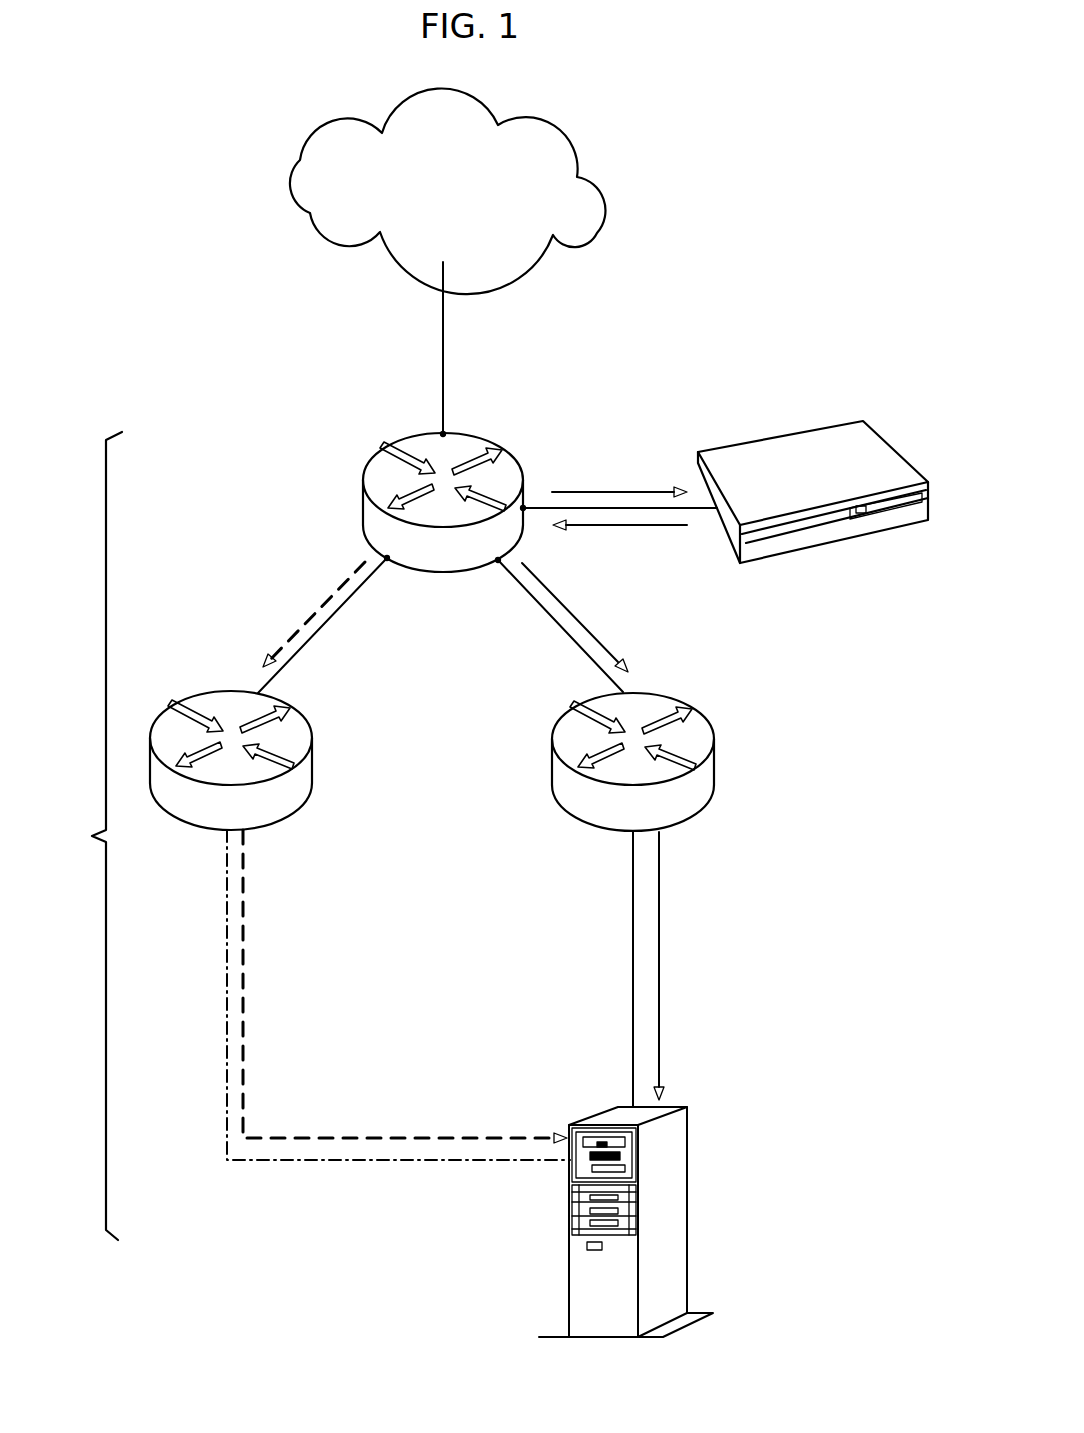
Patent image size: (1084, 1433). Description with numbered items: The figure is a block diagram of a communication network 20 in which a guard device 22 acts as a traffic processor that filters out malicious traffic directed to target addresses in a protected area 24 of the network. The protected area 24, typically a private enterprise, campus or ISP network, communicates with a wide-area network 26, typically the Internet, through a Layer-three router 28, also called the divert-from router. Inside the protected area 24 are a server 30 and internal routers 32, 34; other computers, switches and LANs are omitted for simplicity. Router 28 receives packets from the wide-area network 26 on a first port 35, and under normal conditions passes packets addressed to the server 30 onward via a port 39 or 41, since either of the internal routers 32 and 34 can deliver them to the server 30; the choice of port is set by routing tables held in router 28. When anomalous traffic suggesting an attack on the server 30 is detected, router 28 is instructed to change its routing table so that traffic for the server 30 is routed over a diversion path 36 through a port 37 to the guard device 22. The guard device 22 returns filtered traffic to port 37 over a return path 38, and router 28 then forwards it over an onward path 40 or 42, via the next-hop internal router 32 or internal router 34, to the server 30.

The communication network 20 is at (806, 226).
The guard device 22 is at (878, 458).
The protected area 24 is at (345, 836).
The wide-area network 26 is at (300, 158).
The router 28 is at (516, 456).
The server 30 is at (688, 1196).
The internal router 32 is at (708, 716).
The internal router 34 is at (306, 716).
The first port 35 is at (442, 433).
The diversion path 36 is at (622, 492).
The port 37 is at (524, 510).
The return path 38 is at (656, 528).
The port 39 is at (498, 562).
The onward path 40 is at (582, 622).
The port 41 is at (387, 560).
The onward path 42 is at (308, 622).